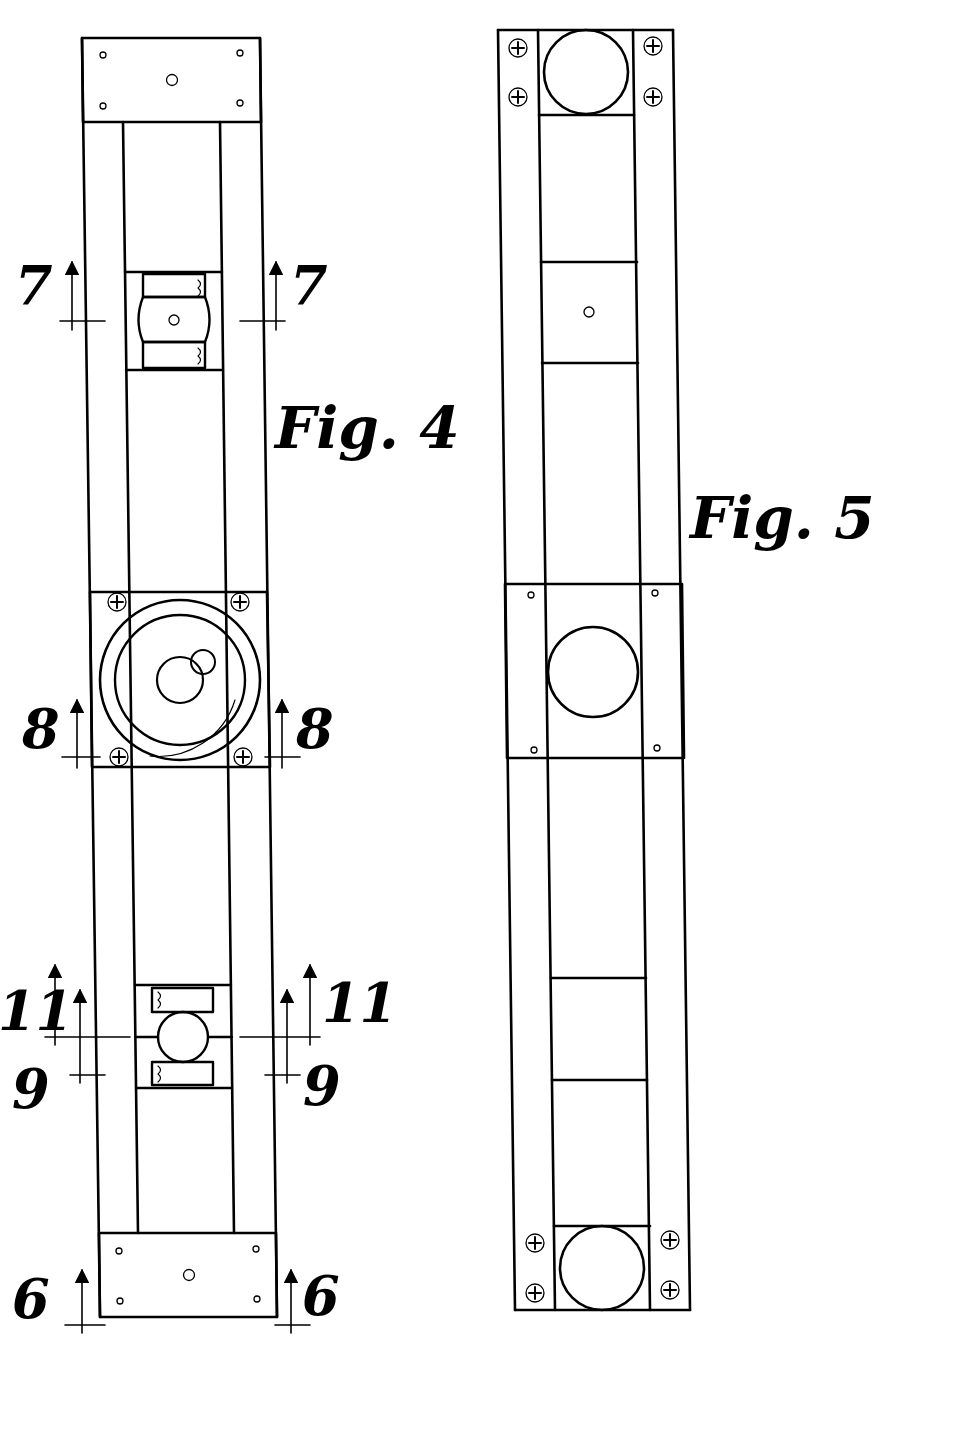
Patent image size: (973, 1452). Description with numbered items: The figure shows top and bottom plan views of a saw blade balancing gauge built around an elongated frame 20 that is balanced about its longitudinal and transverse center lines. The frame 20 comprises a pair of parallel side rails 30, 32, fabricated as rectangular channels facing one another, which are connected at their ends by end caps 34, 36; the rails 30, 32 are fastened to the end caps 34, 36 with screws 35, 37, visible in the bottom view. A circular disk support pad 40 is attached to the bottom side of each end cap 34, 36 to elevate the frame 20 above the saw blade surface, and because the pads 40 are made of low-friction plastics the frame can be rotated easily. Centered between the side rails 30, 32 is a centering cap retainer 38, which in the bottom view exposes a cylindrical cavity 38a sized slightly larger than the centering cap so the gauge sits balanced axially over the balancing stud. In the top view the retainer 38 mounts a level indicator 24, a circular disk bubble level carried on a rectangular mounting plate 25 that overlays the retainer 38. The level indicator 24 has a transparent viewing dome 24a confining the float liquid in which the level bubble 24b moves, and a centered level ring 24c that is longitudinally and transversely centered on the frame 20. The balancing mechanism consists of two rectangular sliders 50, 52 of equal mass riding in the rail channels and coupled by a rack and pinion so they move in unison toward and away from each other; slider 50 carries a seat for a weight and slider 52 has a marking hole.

In FIG. 4, the frame 20 is at (280, 925).
In FIG. 4, the level indicator 24 is at (265, 680).
In FIG. 4, the viewing dome 24a is at (225, 705).
In FIG. 4, the level bubble 24b is at (200, 655).
In FIG. 4, the level ring 24c is at (157, 683).
In FIG. 4, the mounting plate 25 is at (215, 760).
In FIG. 4, the side rail 30 is at (100, 920).
In FIG. 5, the side rail 30 is at (665, 866).
In FIG. 4, the side rail 32 is at (234, 930).
In FIG. 5, the side rail 32 is at (526, 904).
In FIG. 4, the end cap 34 is at (160, 1240).
In FIG. 5, the end cap 34 is at (637, 1226).
In FIG. 5, the screws 35 is at (525, 1243).
In FIG. 4, the end cap 36 is at (201, 112).
In FIG. 5, the end cap 36 is at (548, 118).
In FIG. 5, the screws 37 is at (508, 50).
In FIG. 4, the centering cap retainer 38 is at (258, 620).
In FIG. 5, the centering cap retainer 38 is at (668, 640).
In FIG. 5, the cylindrical cavity 38a is at (623, 670).
In FIG. 5, the support pad 40 is at (576, 100).
In FIG. 4, the slider 50 is at (196, 985).
In FIG. 5, the slider 50 is at (568, 978).
In FIG. 4, the slider 52 is at (160, 372).
In FIG. 5, the slider 52 is at (624, 368).